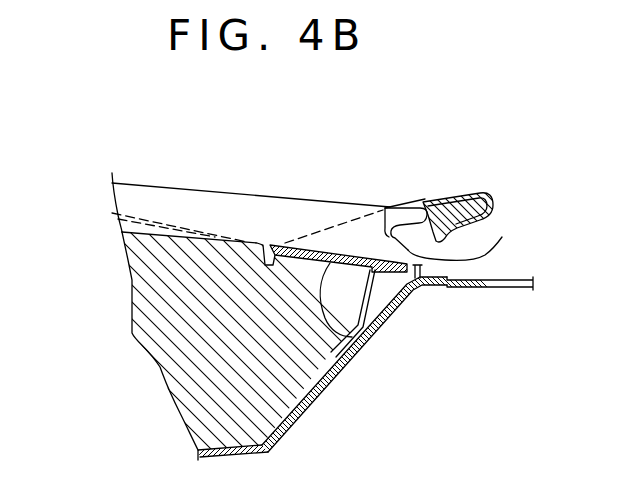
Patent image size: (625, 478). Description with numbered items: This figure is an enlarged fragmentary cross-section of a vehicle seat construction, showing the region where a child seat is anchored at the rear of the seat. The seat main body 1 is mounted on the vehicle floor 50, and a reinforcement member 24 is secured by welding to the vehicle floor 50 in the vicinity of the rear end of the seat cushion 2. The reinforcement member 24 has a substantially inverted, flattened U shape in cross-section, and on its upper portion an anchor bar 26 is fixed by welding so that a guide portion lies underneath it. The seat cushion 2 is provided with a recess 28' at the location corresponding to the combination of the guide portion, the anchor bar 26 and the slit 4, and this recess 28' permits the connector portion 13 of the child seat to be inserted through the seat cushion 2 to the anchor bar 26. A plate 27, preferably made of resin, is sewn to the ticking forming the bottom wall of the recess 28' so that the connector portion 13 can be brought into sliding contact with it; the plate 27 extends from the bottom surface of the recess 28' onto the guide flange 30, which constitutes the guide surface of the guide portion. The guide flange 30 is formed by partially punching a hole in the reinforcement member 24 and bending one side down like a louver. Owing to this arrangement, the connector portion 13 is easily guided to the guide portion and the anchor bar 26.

The seat main body 1 is at (126, 283).
The seat cushion 2 is at (197, 353).
The connector portion 13 is at (250, 210).
The recess 28' is at (334, 188).
The anchor bar 26 is at (382, 217).
The slit 4 is at (412, 203).
The guide flange 30 is at (469, 238).
The vehicle floor 50 is at (513, 280).
The reinforcement member 24 is at (397, 303).
The plate 27 is at (360, 340).